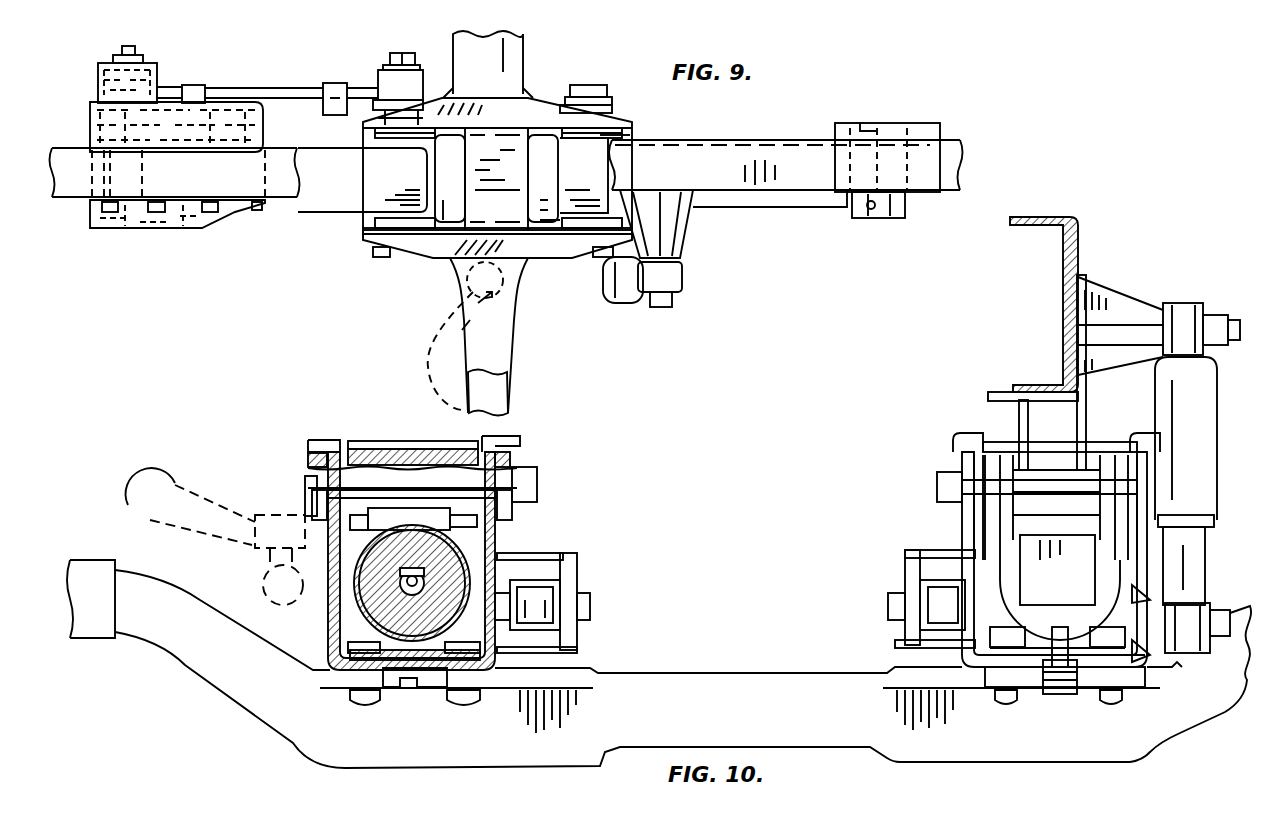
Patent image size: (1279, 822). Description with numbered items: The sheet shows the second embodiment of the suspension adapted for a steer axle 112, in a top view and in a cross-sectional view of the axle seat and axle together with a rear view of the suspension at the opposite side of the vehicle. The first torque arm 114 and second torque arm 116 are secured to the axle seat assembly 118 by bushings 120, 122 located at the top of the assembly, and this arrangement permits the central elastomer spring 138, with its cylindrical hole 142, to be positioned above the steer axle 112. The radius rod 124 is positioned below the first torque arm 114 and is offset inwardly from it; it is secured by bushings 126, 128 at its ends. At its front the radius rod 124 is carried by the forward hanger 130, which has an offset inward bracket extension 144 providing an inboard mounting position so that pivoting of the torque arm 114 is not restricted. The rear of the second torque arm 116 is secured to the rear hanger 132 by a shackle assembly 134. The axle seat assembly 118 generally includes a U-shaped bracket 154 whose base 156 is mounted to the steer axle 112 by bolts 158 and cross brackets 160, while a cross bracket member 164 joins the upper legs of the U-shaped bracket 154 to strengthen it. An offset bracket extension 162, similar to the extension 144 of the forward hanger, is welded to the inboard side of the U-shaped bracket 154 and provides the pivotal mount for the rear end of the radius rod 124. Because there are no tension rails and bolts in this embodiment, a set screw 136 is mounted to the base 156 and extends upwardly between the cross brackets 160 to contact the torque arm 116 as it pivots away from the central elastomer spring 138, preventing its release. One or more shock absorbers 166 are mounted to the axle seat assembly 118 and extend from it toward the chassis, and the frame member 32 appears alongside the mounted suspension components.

In FIG. 9, the axle tube / frame member 32 is at (72, 200).
In FIG. 10, the axle tube / frame member 32 is at (1080, 250).
In FIG. 9, the steer axle 112 is at (512, 40).
In FIG. 10, the steer axle 112 is at (712, 683).
In FIG. 9, the first torque arm 114 is at (318, 198).
In FIG. 9, the second torque arm 116 is at (762, 210).
In FIG. 10, the second torque arm 116 is at (1068, 594).
In FIG. 9, the axle seat assembly 118 is at (548, 270).
In FIG. 10, the axle seat assembly 118 is at (707, 574).
In FIG. 9, the bushing 120 is at (362, 226).
In FIG. 10, the bushing 120 is at (540, 466).
In FIG. 9, the bushing 122 is at (632, 137).
In FIG. 10, the bushing 122 is at (933, 485).
In FIG. 9, the radius rod 124 is at (288, 68).
In FIG. 10, the radius rod 124 is at (538, 580).
In FIG. 9, the bushing 126 is at (128, 46).
In FIG. 9, the bushing 128 is at (399, 52).
In FIG. 10, the bushing 128 is at (598, 602).
In FIG. 9, the forward hanger 130 is at (95, 235).
In FIG. 9, the rear hanger 132 is at (937, 192).
In FIG. 10, the rear hanger 132 is at (990, 393).
In FIG. 9, the shackle assembly 134 is at (882, 222).
In FIG. 10, the shackle assembly 134 is at (1005, 507).
In FIG. 10, the set screw 136 is at (1058, 695).
In FIG. 9, the central elastomer spring 138 is at (455, 215).
In FIG. 10, the central elastomer spring 138 is at (388, 604).
In FIG. 10, the cylindrical hole 142 is at (405, 590).
In FIG. 9, the offset inward bracket extension 144 is at (160, 64).
In FIG. 9, the U-shaped bracket 154 is at (415, 250).
In FIG. 10, the U-shaped bracket 154 is at (333, 437).
In FIG. 10, the base 156 is at (440, 690).
In FIG. 10, the bolts 158 is at (462, 702).
In FIG. 10, the cross brackets 160 is at (335, 668).
In FIG. 9, the offset bracket extension 162 is at (372, 68).
In FIG. 10, the offset bracket extension 162 is at (580, 572).
In FIG. 9, the cross bracket member 164 is at (520, 127).
In FIG. 10, the cross bracket member 164 is at (1100, 442).
In FIG. 9, the shock absorber 166 is at (626, 298).
In FIG. 10, the shock absorber 166 is at (1207, 460).